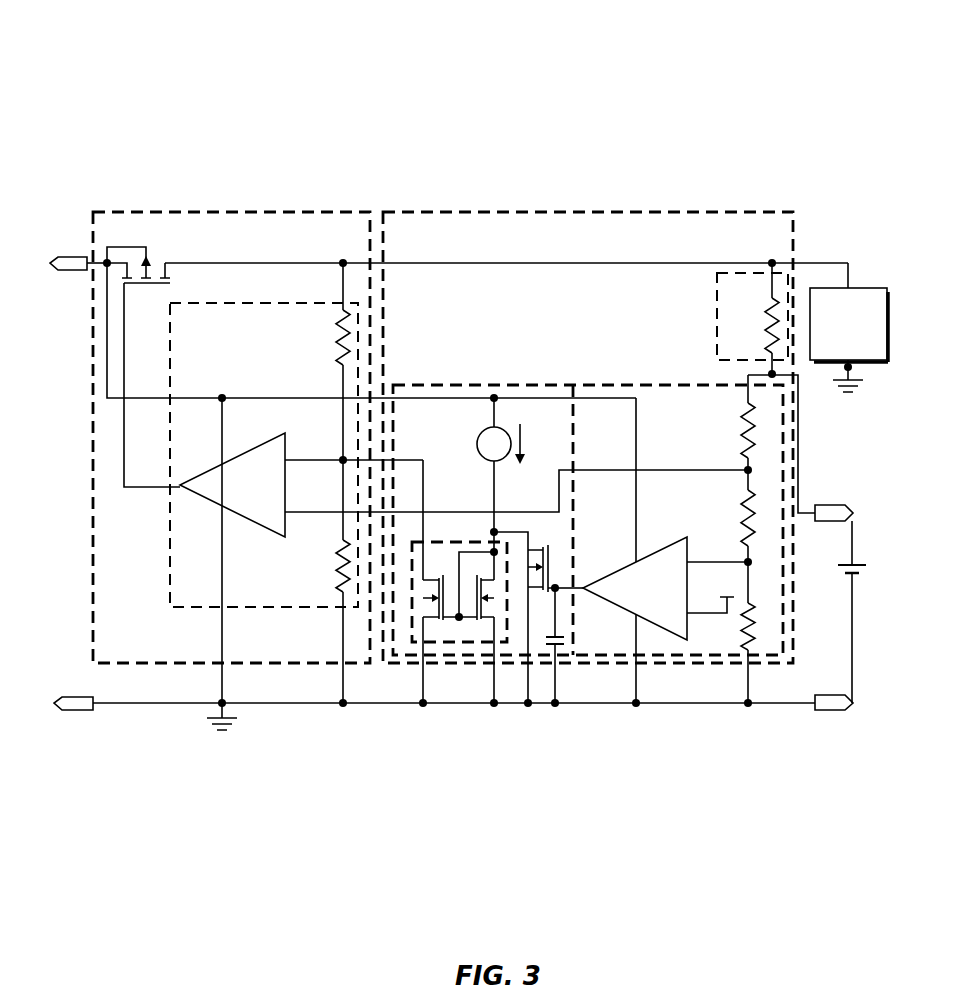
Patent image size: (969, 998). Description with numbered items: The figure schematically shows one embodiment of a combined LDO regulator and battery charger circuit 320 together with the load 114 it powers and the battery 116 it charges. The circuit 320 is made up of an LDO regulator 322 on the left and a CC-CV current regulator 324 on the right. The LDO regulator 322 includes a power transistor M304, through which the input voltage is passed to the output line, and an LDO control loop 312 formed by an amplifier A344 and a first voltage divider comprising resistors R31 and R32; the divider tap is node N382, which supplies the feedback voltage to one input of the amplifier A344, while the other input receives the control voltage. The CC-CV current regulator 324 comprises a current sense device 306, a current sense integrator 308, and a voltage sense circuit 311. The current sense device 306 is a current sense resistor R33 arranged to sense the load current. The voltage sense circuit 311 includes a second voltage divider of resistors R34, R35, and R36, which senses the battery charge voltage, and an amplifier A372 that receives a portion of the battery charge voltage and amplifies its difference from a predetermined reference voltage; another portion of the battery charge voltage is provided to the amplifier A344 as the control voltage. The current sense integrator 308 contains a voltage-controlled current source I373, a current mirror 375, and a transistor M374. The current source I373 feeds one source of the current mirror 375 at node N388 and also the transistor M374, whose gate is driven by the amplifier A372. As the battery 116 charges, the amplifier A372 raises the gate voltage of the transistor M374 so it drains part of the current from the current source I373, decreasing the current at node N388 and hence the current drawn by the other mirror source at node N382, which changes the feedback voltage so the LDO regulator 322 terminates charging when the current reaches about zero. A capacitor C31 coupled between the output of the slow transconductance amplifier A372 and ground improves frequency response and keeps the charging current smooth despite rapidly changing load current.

The combined LDO regulator and battery charger circuit 320 is at (646, 78).
The LDO regulator 322 is at (196, 212).
The CC-CV current regulator 324 is at (492, 212).
The LDO control loop 312 is at (260, 607).
The current sense integrator 308 is at (536, 386).
The voltage sense circuit 311 is at (673, 660).
The current sense device 306 is at (718, 312).
The current mirror 375 is at (440, 645).
The load 114 is at (849, 327).
The battery 116 is at (868, 578).
The power transistor M304 is at (148, 292).
The resistor R31 is at (326, 314).
The resistor R32 is at (325, 621).
The current sense resistor R33 is at (750, 319).
The resistor R34 is at (729, 432).
The resistor R35 is at (729, 544).
The resistor R36 is at (734, 653).
The amplifier A344 is at (252, 525).
The amplifier A372 is at (657, 553).
The node N382 is at (342, 457).
The node N388 is at (494, 530).
The voltage-controlled current source I373 is at (478, 449).
The transistor M374 is at (546, 546).
The capacitor C31 is at (563, 648).